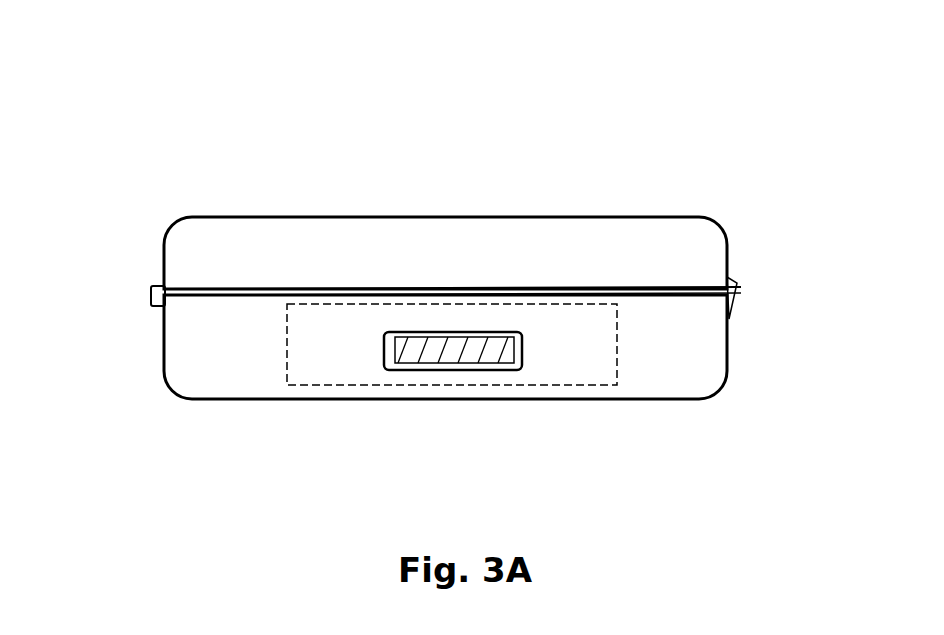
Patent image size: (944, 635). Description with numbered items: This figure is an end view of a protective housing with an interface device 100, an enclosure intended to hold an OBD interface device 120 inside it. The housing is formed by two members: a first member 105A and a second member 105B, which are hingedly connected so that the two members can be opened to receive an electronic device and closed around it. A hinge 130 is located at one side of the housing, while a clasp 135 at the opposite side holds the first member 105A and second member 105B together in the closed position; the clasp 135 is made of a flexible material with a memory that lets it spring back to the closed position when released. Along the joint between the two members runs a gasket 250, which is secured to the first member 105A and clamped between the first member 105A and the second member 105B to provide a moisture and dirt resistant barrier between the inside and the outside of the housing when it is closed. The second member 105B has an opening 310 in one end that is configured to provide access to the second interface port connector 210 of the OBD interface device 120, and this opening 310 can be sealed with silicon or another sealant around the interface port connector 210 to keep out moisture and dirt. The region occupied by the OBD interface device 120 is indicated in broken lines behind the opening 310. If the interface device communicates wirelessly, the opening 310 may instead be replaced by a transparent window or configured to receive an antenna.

The protective housing with an interface device 100 is at (398, 104).
The first member 105A is at (686, 214).
The second member 105B is at (727, 363).
The gasket 250 is at (332, 289).
The hinge 130 is at (150, 292).
The clasp 135 is at (738, 290).
The OBD interface device 120 is at (608, 387).
The opening 310 is at (392, 370).
The second interface port connector 210 is at (482, 363).